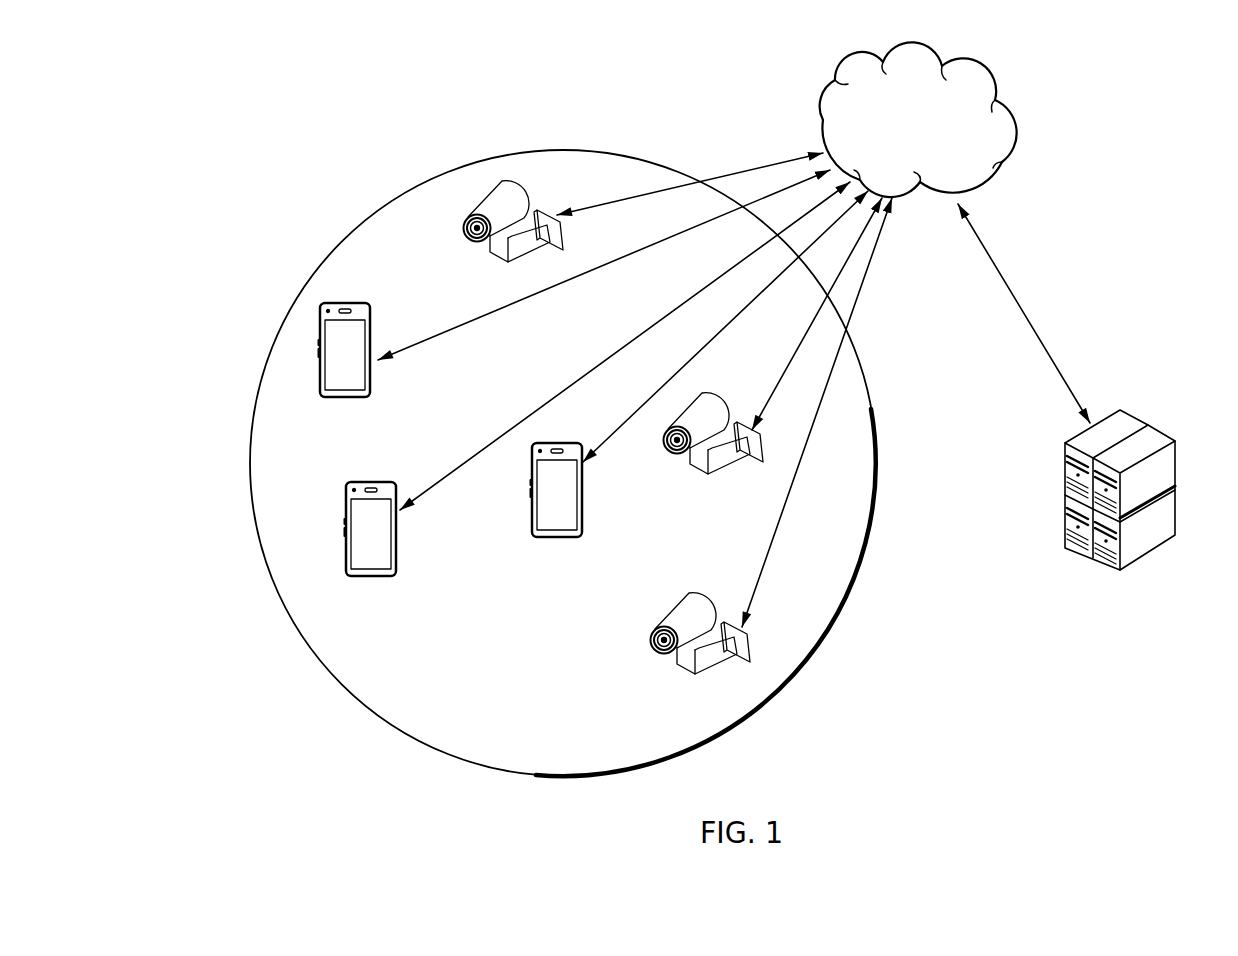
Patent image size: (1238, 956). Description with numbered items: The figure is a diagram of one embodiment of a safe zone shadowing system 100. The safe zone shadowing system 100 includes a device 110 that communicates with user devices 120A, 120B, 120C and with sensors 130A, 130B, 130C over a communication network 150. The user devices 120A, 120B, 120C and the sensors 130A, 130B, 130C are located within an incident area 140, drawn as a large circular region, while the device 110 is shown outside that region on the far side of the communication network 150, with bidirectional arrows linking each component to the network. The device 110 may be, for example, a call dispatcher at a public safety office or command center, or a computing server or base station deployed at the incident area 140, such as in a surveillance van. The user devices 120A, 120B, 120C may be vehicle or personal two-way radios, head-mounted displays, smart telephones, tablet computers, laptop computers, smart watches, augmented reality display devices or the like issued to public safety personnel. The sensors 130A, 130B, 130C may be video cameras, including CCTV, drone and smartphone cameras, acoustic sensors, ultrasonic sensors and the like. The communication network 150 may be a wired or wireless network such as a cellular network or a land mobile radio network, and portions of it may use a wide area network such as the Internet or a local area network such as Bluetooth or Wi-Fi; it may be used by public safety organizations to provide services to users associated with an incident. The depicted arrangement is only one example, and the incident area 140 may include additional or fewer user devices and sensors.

The safe zone shadowing system 100 is at (250, 116).
The device 110 is at (1080, 552).
The user device 120A is at (332, 398).
The user device 120B is at (356, 578).
The user device 120C is at (542, 539).
The sensor 130A is at (468, 238).
The sensor 130B is at (692, 470).
The sensor 130C is at (658, 648).
The incident area 140 is at (335, 684).
The communication network 150 is at (838, 78).